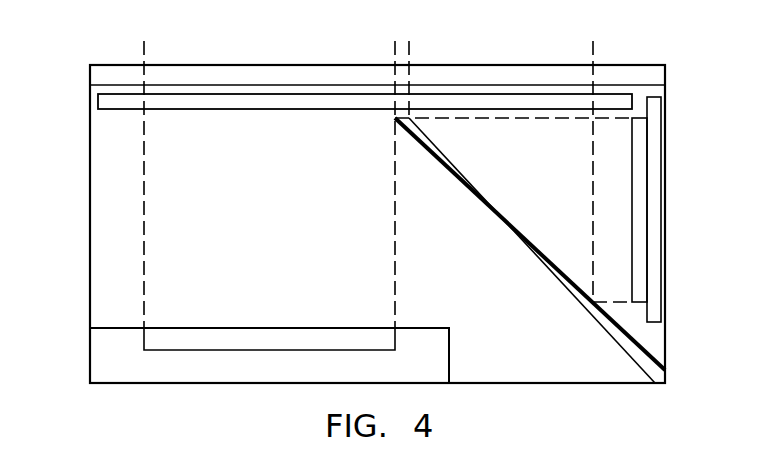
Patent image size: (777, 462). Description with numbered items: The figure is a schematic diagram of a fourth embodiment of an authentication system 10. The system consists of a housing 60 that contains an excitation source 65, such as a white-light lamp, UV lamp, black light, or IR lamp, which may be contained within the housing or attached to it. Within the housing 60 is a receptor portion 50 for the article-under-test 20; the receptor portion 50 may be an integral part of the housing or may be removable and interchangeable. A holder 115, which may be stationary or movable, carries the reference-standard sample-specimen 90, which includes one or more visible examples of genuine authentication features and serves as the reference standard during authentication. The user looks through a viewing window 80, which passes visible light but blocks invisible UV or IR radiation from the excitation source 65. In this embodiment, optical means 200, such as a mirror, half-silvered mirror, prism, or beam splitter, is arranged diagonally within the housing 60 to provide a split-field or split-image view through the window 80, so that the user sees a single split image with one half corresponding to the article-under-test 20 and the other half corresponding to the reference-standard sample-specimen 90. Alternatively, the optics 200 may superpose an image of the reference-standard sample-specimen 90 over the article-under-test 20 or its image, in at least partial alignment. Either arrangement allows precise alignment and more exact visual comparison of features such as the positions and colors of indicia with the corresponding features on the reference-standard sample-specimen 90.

The authentication system 10 is at (90, 67).
The article-under-test 20 is at (261, 342).
The receptor portion 50 is at (147, 363).
The housing 60 is at (90, 215).
The excitation source 65 is at (608, 100).
The viewing window 80 is at (495, 72).
The reference-standard sample-specimen 90 is at (640, 199).
The holder 115 is at (653, 263).
The optical means 200 is at (605, 330).